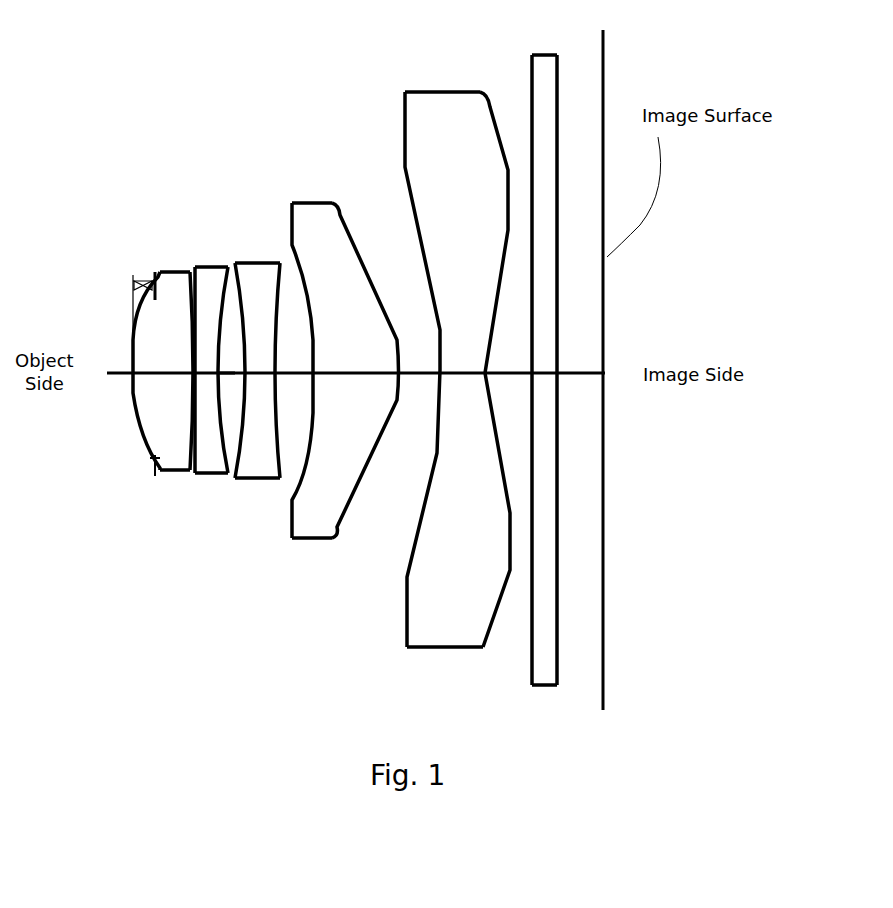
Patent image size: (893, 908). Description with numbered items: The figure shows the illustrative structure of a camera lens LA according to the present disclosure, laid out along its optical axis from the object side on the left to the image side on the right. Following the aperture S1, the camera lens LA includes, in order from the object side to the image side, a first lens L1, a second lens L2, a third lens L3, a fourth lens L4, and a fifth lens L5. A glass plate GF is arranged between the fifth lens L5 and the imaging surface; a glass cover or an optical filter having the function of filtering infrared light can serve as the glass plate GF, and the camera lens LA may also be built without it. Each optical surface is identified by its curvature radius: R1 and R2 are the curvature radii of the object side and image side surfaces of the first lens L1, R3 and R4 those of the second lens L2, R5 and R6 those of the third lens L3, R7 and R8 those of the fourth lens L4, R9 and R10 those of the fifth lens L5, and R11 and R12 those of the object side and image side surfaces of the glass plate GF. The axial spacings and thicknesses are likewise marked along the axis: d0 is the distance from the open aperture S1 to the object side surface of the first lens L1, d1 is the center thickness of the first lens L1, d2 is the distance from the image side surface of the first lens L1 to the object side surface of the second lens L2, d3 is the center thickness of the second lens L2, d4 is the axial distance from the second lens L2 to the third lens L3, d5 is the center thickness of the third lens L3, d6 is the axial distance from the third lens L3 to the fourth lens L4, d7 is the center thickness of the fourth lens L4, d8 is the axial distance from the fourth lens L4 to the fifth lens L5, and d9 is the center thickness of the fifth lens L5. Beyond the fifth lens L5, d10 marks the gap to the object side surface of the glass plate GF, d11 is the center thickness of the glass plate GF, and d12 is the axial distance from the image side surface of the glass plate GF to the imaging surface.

The camera lens LA is at (170, 153).
The aperture S1 is at (155, 283).
The first lens L1 is at (140, 399).
The second lens L2 is at (193, 387).
The third lens L3 is at (246, 409).
The fourth lens L4 is at (337, 385).
The fifth lens L5 is at (431, 388).
The glass plate GF is at (543, 175).
The curvature radius of the first lens's object side surface R1 is at (133, 388).
The curvature radius of the first lens's image side surface R2 is at (187, 388).
The curvature radius of the second lens's object side surface R3 is at (195, 392).
The curvature radius of the second lens's image side surface R4 is at (220, 400).
The curvature radius of the third lens's object side surface R5 is at (243, 400).
The curvature radius of the third lens's image side surface R6 is at (272, 400).
The curvature radius of the fourth lens's object side surface R7 is at (312, 397).
The curvature radius of the fourth lens's image side surface R8 is at (395, 378).
The curvature radius of the fifth lens's object side surface R9 is at (430, 457).
The curvature radius of the fifth lens's image side surface R10 is at (493, 443).
The curvature radius of the glass plate's object side surface R11 is at (530, 563).
The curvature radius of the glass plate's image side surface R12 is at (560, 560).
The distance from the aperture to the object side surface of the first lens d0 is at (133, 280).
The center thickness of the first lens d1 is at (162, 362).
The distance from the first lens to the second lens d2 is at (188, 348).
The center thickness of the second lens d3 is at (215, 362).
The axial distance from the second lens to the third lens d4 is at (231, 362).
The center thickness of the third lens d5 is at (260, 362).
The axial distance from the third lens to the fourth lens d6 is at (294, 362).
The center thickness of the fourth lens d7 is at (355, 362).
The axial distance from the fourth lens to the fifth lens d8 is at (418, 362).
The center thickness of the fifth lens d9 is at (462, 362).
The on-axis distance from image side surface of fifth lens to object side surface of d10 is at (508, 362).
The center thickness of the glass plate d11 is at (545, 370).
The axial distance from the glass plate to the imaging surface d12 is at (581, 362).